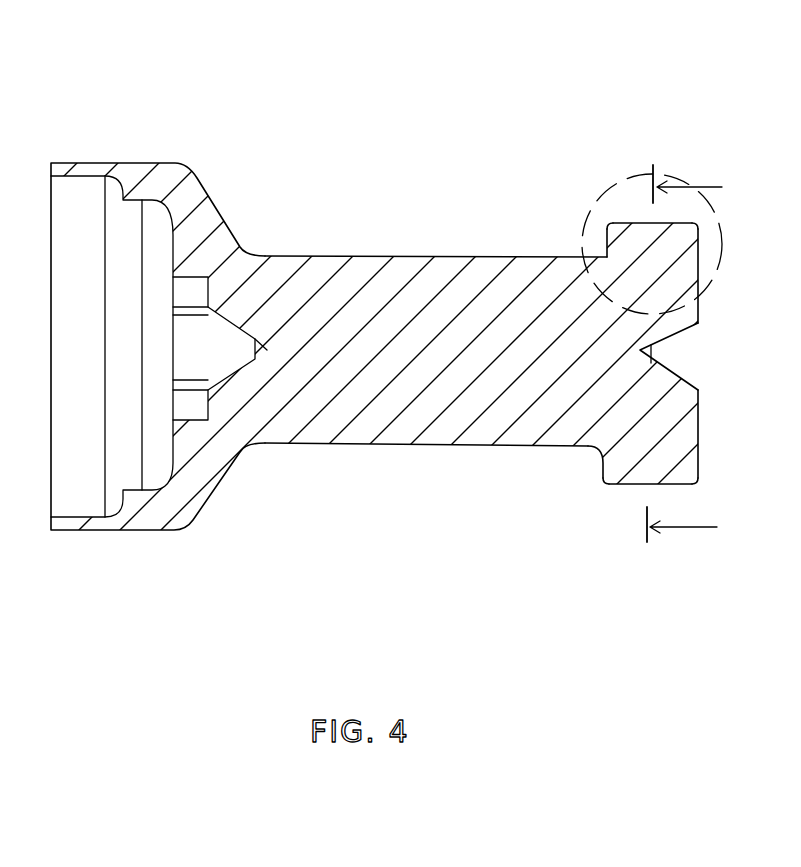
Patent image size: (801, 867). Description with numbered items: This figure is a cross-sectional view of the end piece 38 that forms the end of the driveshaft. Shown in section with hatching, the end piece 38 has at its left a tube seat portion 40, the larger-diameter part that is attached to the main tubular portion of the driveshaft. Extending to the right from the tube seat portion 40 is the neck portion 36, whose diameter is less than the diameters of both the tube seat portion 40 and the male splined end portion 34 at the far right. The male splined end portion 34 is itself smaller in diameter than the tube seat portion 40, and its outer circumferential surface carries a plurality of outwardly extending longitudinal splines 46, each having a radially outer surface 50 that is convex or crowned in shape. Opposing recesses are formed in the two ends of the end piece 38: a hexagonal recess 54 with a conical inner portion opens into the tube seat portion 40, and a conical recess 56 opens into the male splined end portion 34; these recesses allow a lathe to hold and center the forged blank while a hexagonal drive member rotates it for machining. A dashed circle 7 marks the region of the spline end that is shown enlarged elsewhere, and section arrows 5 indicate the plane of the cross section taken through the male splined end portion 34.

The end piece 38 is at (116, 91).
The tube seat portion 40 is at (160, 522).
The hexagonal recess 54 is at (209, 294).
The neck portion 36 is at (375, 440).
The male splined end portion 34 is at (660, 415).
The splines 46 is at (640, 233).
The radially outer surface 50 is at (628, 223).
The conical recess 56 is at (673, 332).
The detail circle 7 is at (613, 180).
The section line 5 is at (684, 353).